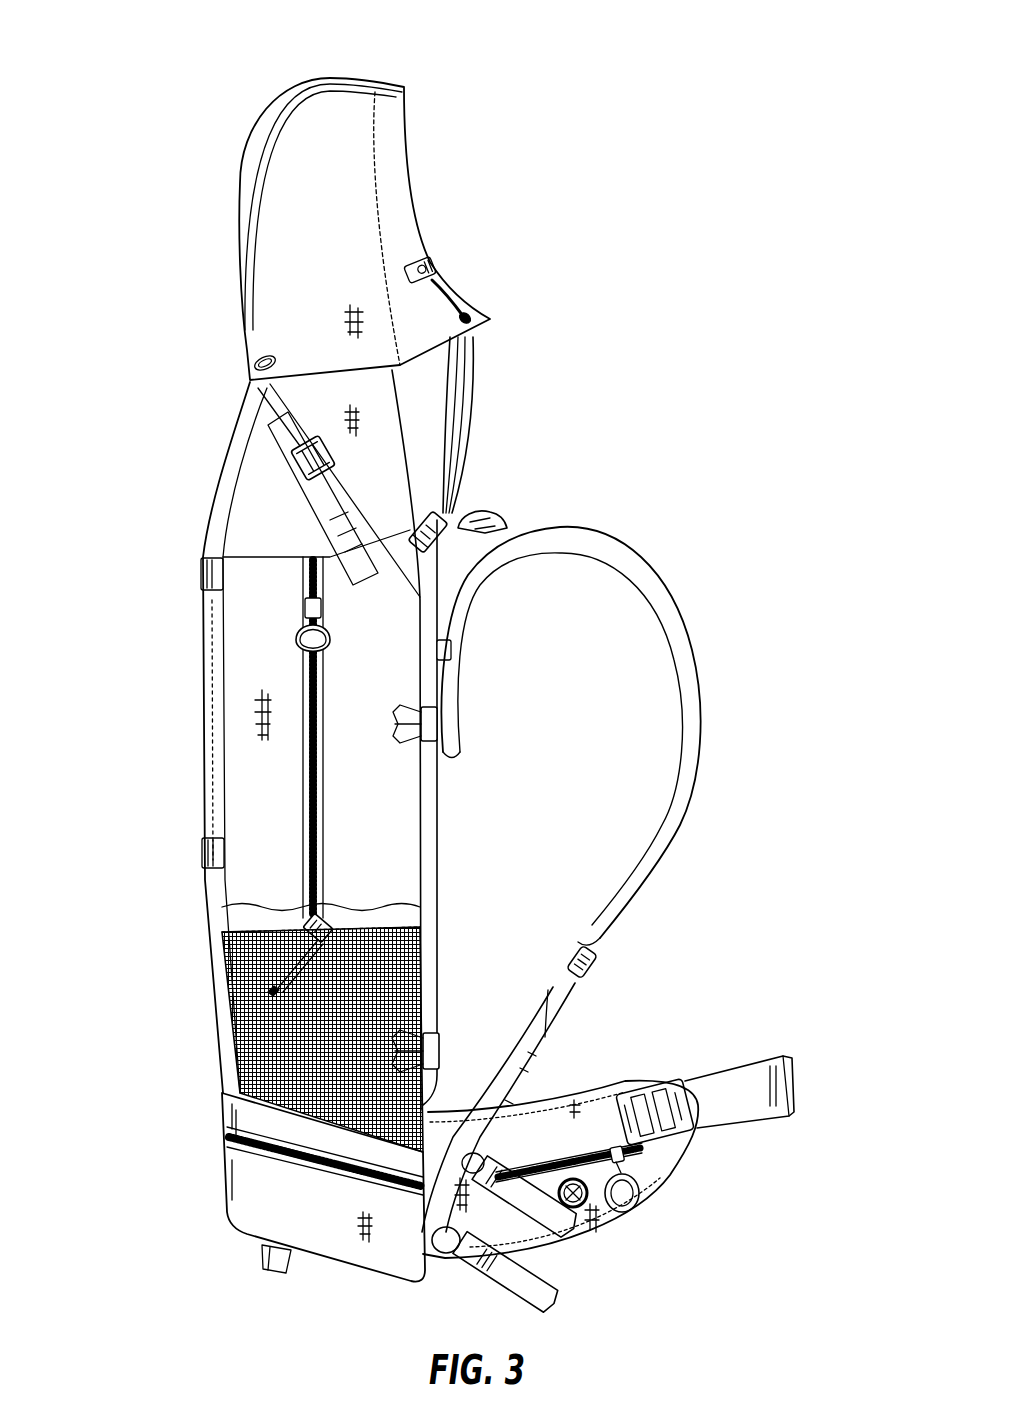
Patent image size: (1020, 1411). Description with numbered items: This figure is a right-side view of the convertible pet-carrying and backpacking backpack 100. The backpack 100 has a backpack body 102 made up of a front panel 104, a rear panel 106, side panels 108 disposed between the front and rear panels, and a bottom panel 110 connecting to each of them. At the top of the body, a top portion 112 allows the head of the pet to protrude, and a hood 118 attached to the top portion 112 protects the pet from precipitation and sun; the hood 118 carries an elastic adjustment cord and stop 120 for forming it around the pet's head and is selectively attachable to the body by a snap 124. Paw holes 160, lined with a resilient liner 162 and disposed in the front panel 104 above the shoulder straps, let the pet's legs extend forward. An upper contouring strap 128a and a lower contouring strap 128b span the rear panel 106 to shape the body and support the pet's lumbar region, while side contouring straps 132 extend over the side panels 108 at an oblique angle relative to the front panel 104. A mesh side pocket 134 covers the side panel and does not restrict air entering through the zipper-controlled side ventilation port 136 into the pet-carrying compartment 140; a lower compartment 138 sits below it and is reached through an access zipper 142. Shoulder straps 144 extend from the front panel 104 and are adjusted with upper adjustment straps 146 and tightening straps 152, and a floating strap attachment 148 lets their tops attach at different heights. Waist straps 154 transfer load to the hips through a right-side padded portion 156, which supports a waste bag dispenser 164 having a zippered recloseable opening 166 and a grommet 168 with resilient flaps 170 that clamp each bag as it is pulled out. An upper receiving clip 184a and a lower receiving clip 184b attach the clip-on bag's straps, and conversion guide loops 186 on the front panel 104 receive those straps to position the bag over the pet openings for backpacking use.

The backpack 100 is at (182, 144).
The backpack body 102 is at (250, 575).
The front panel 104 is at (440, 870).
The rear panel 106 is at (208, 745).
The side panels 108 is at (250, 688).
The bottom panel 110 is at (355, 1275).
The top portion 112 is at (430, 433).
The hood 118 is at (334, 118).
The elastic adjustment cord and stop 120 is at (448, 272).
The snap 124 is at (253, 364).
The upper contouring strap 128a is at (204, 574).
The lower contouring strap 128b is at (204, 850).
The side contouring straps 132 is at (285, 505).
The side pockets 134 is at (225, 980).
The side ventilation port 136 is at (313, 800).
The lower compartment 138 is at (253, 1195).
The pet-carrying compartment 140 is at (215, 895).
The access zipper 142 is at (230, 1140).
The shoulder straps 144 is at (682, 585).
The upper adjustment straps 146 is at (530, 528).
The floating strap attachment 148 is at (450, 648).
The tightening straps 152 is at (510, 1048).
The waist straps 154 is at (738, 1085).
The right-side padded portion 156 is at (600, 1235).
The paw holes 160 is at (473, 352).
The resilient liner 162 is at (460, 395).
The waste bag dispenser 164 is at (570, 1242).
The recloseable opening 166 is at (600, 1110).
The grommet 168 is at (598, 1210).
The resilient flaps 170 is at (577, 1207).
The upper receiving clip 184a is at (432, 740).
The lower receiving clip 184b is at (436, 1040).
The conversion guide loops 186 is at (462, 520).